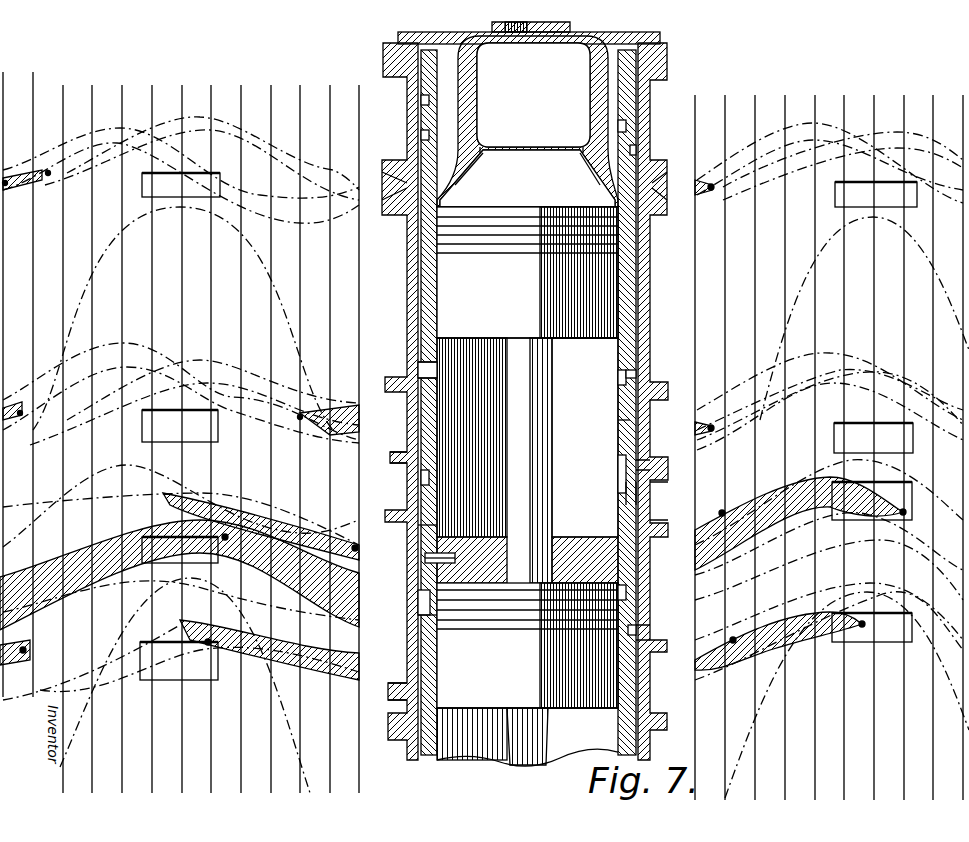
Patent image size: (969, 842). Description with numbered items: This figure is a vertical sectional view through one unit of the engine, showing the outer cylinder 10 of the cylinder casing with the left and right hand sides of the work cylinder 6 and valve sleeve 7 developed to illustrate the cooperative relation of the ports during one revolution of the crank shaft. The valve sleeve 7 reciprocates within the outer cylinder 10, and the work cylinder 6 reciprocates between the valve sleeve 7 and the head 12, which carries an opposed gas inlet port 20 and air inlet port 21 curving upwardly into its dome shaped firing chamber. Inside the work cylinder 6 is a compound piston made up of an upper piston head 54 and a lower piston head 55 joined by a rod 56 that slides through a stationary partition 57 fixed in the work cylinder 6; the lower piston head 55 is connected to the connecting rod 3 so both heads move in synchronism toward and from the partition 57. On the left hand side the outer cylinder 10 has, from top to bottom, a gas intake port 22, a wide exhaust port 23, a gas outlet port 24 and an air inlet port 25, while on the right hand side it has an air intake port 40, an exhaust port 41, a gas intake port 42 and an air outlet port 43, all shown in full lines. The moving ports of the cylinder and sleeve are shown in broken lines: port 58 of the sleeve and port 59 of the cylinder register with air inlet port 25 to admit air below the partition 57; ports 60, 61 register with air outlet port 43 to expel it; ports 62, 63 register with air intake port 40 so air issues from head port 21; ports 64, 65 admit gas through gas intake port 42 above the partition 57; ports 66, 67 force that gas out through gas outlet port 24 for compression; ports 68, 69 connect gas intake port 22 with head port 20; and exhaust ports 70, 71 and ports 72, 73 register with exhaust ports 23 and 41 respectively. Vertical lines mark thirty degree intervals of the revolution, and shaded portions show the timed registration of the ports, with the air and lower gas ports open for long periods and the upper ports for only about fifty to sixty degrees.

The connecting rod 3 is at (540, 730).
The work cylinder 6 is at (616, 430).
The valve sleeve 7 is at (640, 344).
The outer cylinder 10 is at (407, 281).
The head 12 is at (525, 45).
The gas inlet port 20 is at (483, 153).
The air inlet port 21 is at (583, 150).
The gas intake port 22 is at (274, 186).
The exhaust port 23 is at (407, 432).
The gas outlet port 24 is at (412, 560).
The air inlet port 25 is at (407, 665).
The air intake port 40 is at (660, 200).
The exhaust port 41 is at (643, 465).
The gas intake port 42 is at (898, 470).
The air outlet port 43 is at (650, 625).
The upper piston head 54 is at (527, 272).
The lower piston head 55 is at (527, 645).
The rod 56 is at (540, 411).
The partition 57 is at (578, 548).
The port 58 is at (418, 625).
The port 59 is at (420, 617).
The port 60 is at (640, 592).
The port 61 is at (640, 632).
The port 62 is at (640, 150).
The port 63 is at (640, 132).
The port 64 is at (632, 500).
The port 65 is at (620, 470).
The port 66 is at (420, 525).
The port 67 is at (420, 502).
The port 68 is at (420, 122).
The port 69 is at (420, 157).
The exhaust port 70 is at (420, 368).
The exhaust port 71 is at (430, 372).
The port 72 is at (622, 378).
The port 73 is at (640, 378).